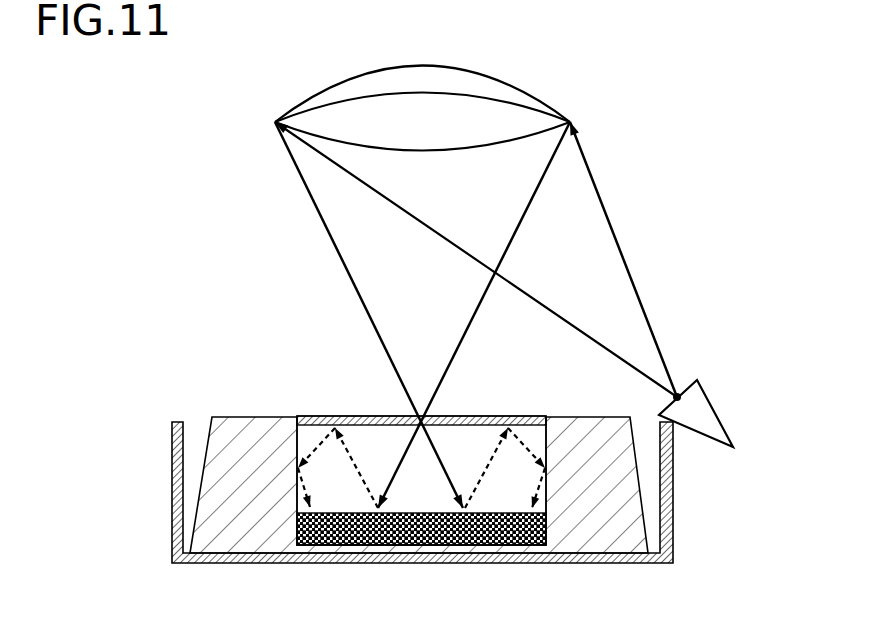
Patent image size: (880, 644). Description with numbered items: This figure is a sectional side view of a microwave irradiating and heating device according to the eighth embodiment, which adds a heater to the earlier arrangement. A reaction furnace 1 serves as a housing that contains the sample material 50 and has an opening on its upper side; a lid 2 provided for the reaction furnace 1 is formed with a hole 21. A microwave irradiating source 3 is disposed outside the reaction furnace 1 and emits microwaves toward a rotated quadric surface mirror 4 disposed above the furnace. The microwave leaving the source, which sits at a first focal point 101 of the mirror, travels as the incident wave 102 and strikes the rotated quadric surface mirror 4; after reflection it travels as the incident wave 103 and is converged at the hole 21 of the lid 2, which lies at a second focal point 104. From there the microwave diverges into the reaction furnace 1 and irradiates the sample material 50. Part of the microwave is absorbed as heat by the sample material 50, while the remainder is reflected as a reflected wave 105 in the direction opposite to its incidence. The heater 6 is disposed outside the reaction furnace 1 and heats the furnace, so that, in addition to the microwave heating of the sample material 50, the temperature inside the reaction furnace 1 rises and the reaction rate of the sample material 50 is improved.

The reaction furnace 1 is at (207, 437).
The lid 2 is at (333, 415).
The hole 21 is at (403, 422).
The microwave irradiating source 3 is at (718, 415).
The rotated quadric surface mirror 4 is at (537, 87).
The heater 6 is at (172, 538).
The sample material 50 is at (352, 535).
The first focal point 101 is at (680, 394).
The incident wave 102 is at (600, 197).
The incident wave 103 is at (317, 217).
The second focal point 104 is at (433, 413).
The reflected wave 105 is at (490, 470).